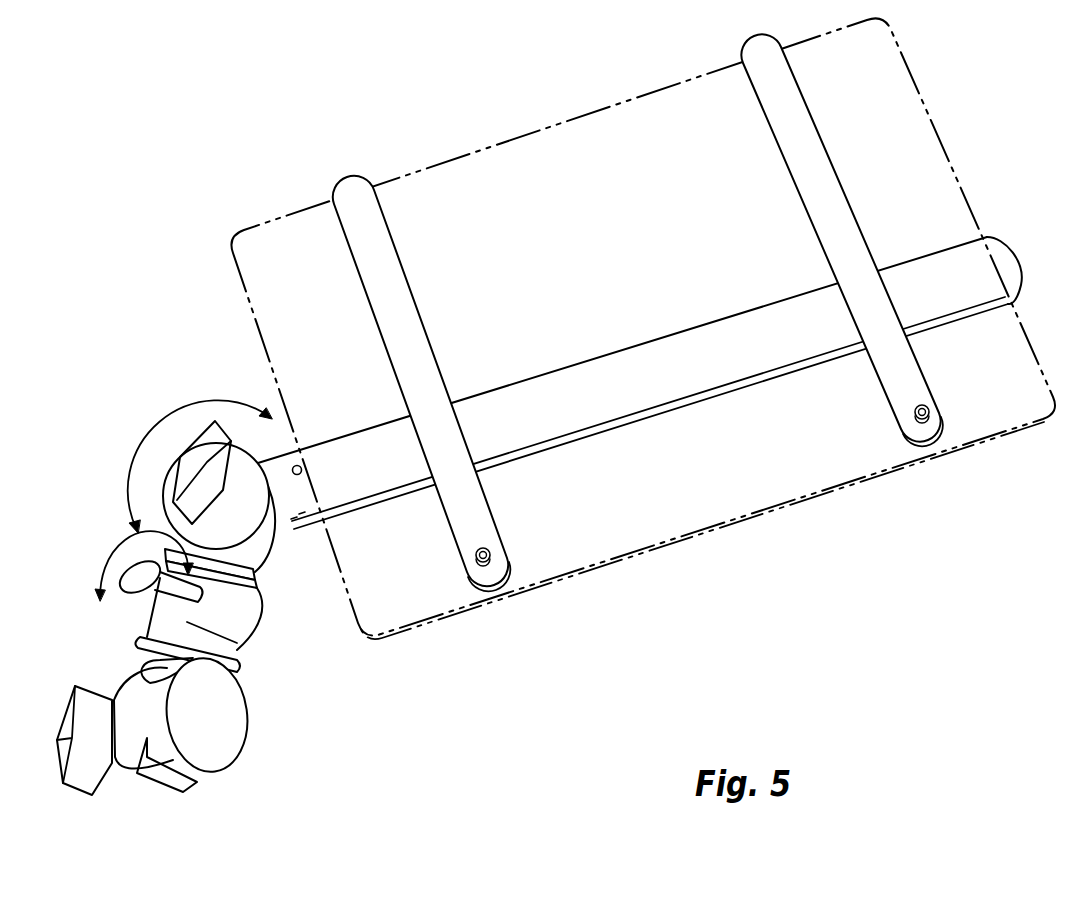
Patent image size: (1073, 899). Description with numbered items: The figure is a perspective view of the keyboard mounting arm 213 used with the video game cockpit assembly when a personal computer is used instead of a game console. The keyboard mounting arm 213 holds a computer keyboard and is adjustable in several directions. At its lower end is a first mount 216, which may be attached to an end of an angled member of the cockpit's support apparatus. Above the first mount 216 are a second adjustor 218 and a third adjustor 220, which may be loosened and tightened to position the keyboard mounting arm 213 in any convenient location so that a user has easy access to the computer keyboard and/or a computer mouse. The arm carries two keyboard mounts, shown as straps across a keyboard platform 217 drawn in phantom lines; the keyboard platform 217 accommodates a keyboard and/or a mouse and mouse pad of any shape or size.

The keyboard mounting arm 213 is at (597, 412).
The first mount 216 is at (203, 750).
The keyboard platform 217 is at (538, 118).
The second adjustor 218 is at (240, 623).
The third adjustor 220 is at (247, 468).